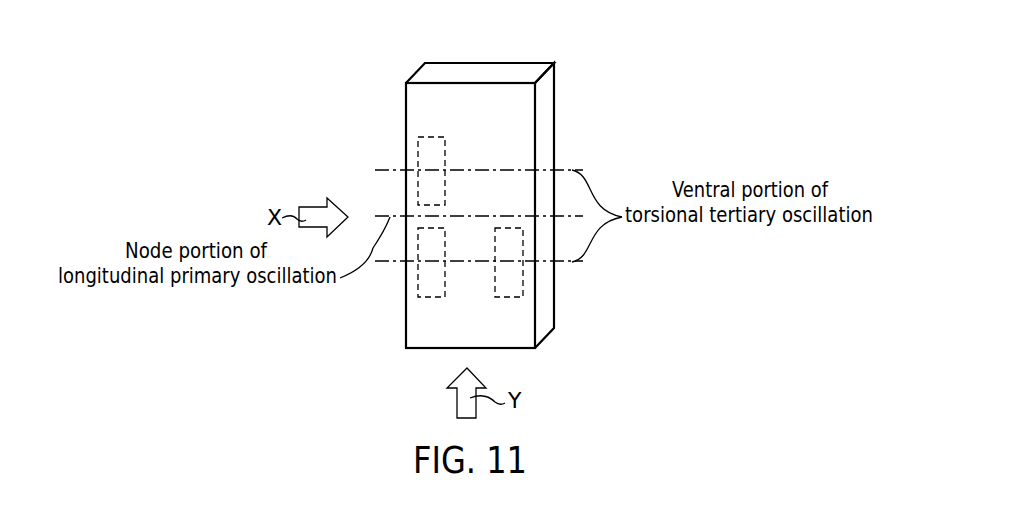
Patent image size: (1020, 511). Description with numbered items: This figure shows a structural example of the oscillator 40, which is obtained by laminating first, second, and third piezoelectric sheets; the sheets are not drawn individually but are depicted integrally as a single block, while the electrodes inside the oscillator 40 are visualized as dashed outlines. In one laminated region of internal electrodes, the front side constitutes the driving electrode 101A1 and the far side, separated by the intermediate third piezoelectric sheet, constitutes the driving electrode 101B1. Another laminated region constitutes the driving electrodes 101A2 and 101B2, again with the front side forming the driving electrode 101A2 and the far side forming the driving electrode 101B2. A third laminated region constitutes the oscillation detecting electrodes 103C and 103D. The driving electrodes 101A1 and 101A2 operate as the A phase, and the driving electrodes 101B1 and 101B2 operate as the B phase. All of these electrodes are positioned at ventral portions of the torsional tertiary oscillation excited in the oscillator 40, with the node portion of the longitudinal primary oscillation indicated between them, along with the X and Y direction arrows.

The oscillator 40 is at (562, 150).
The driving electrode 101A2 is at (350, 169).
The driving electrode 101B2 is at (432, 150).
The driving electrode 101A1 is at (597, 268).
The driving electrode 101B1 is at (508, 286).
The oscillation detecting electrode 103C is at (361, 279).
The oscillation detecting electrode 103D is at (418, 288).